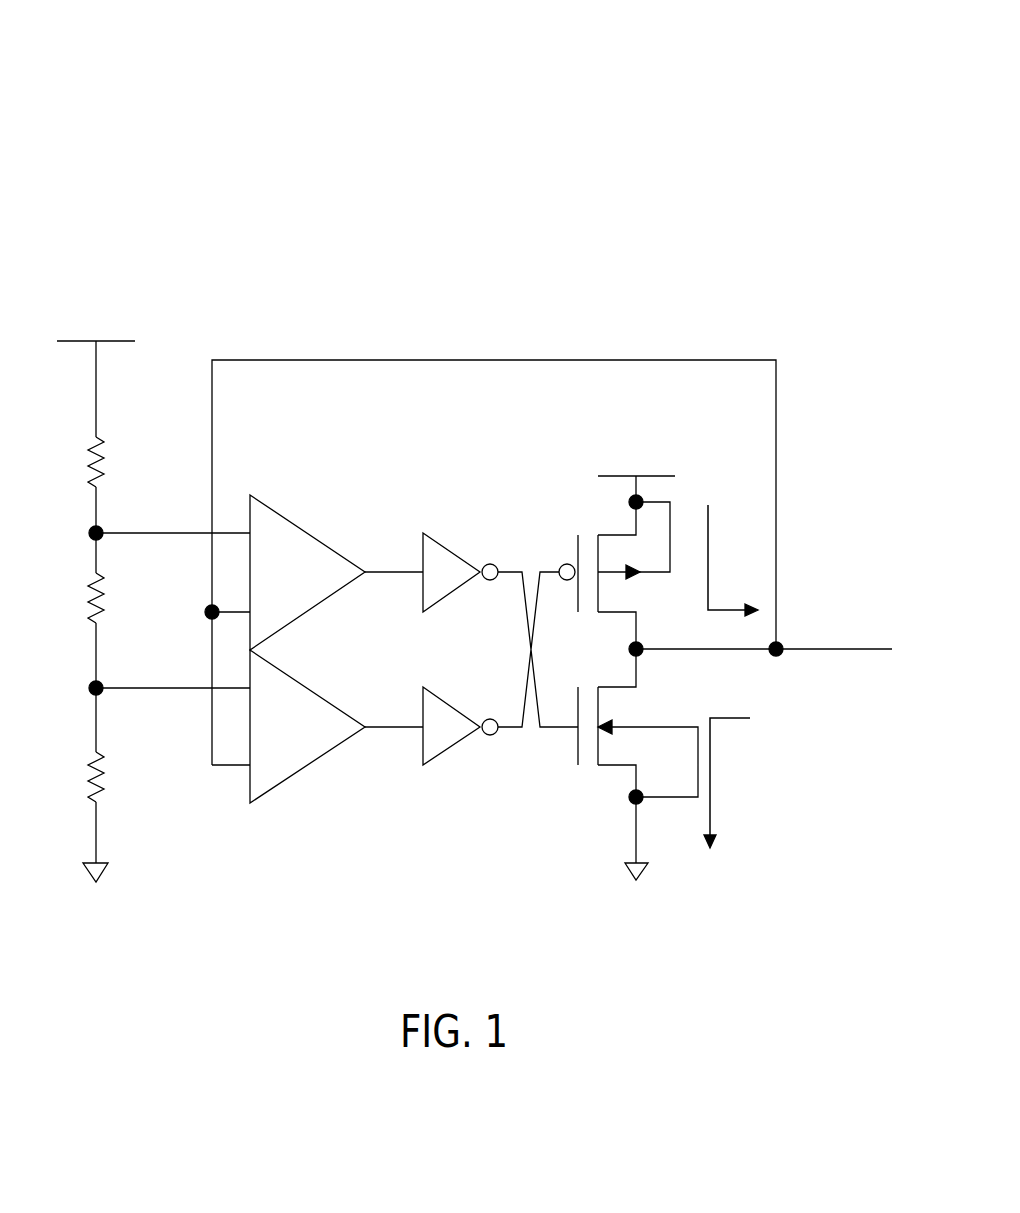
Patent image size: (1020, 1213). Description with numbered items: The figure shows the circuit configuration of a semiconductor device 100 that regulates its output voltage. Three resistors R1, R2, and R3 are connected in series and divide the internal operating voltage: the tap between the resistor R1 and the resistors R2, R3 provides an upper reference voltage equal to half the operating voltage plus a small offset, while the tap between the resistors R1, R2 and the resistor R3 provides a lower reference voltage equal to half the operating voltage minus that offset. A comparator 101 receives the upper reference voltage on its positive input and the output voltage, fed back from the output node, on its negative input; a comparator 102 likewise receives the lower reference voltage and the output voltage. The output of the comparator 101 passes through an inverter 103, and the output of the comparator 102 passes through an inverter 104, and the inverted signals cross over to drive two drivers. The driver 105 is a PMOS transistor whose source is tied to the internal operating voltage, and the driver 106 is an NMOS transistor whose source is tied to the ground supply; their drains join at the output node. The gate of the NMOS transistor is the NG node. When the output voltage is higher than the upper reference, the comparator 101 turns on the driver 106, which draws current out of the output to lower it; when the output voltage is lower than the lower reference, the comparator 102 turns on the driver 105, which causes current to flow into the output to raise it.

The semiconductor device 100 is at (753, 168).
The comparator 101 is at (300, 527).
The comparator 102 is at (298, 772).
The inverter 103 is at (452, 546).
The inverter 104 is at (428, 768).
The driver 105 is at (590, 545).
The driver 106 is at (590, 765).
The resistor R1 is at (67, 462).
The resistor R2 is at (67, 598).
The resistor R3 is at (67, 777).
The NG node NG is at (542, 730).